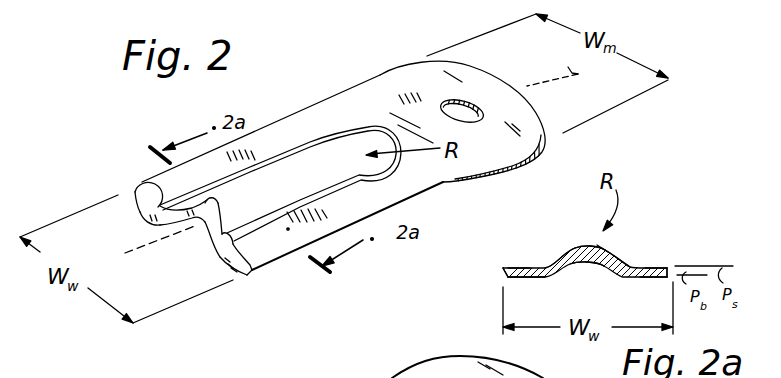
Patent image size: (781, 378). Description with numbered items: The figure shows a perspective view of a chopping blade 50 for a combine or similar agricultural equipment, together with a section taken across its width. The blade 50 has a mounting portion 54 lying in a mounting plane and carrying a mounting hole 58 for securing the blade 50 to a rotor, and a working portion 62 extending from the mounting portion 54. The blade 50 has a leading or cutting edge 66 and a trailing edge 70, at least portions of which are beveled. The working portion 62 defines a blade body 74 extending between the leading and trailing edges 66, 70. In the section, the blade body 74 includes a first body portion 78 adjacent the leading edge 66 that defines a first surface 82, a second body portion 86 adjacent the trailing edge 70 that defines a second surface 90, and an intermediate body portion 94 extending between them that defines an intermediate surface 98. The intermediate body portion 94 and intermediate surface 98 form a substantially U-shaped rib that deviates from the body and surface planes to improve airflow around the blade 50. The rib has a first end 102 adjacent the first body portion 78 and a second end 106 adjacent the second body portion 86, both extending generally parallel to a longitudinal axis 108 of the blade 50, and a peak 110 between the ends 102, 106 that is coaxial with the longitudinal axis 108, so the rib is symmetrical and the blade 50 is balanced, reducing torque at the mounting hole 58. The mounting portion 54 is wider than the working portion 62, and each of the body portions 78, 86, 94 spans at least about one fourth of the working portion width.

In FIG. 2, the chopping blade 50 is at (484, 53).
In FIG. 2A, the chopping blade 50 is at (644, 200).
In FIG. 2, the mounting portion 54 is at (515, 115).
In FIG. 2, the mounting hole 58 is at (469, 104).
In FIG. 2, the working portion 62 is at (333, 120).
In FIG. 2, the leading edge 66 is at (284, 250).
In FIG. 2A, the leading edge 66 is at (503, 268).
In FIG. 2, the trailing edge 70 is at (144, 182).
In FIG. 2A, the trailing edge 70 is at (669, 267).
In FIG. 2, the blade body 74 is at (380, 189).
In FIG. 2A, the blade body 74 is at (546, 284).
In FIG. 2, the first body portion 78 is at (247, 278).
In FIG. 2A, the first body portion 78 is at (507, 278).
In FIG. 2, the first surface 82 is at (298, 240).
In FIG. 2A, the first surface 82 is at (512, 262).
In FIG. 2, the second body portion 86 is at (140, 213).
In FIG. 2A, the second body portion 86 is at (654, 278).
In FIG. 2, the second surface 90 is at (283, 192).
In FIG. 2A, the second surface 90 is at (663, 262).
In FIG. 2, the intermediate body portion 94 is at (155, 226).
In FIG. 2A, the intermediate body portion 94 is at (610, 262).
In FIG. 2A, the intermediate surface 98 is at (606, 242).
In FIG. 2, the first end 102 is at (213, 250).
In FIG. 2A, the first end 102 is at (540, 267).
In FIG. 2, the second end 106 is at (136, 193).
In FIG. 2A, the second end 106 is at (637, 265).
In FIG. 2, the longitudinal axis 108 is at (578, 76).
In FIG. 2, the peak 110 is at (159, 245).
In FIG. 2A, the peak 110 is at (592, 245).